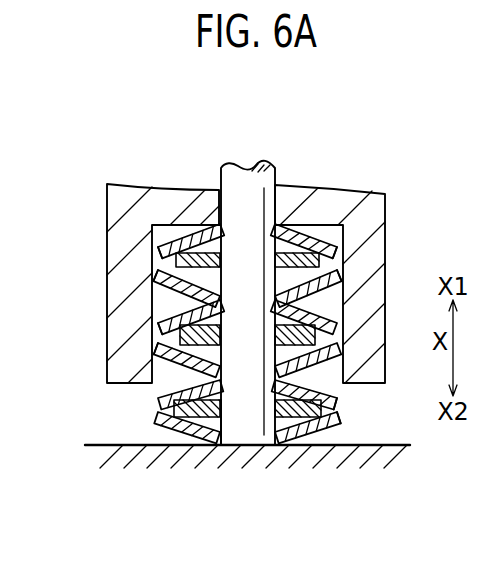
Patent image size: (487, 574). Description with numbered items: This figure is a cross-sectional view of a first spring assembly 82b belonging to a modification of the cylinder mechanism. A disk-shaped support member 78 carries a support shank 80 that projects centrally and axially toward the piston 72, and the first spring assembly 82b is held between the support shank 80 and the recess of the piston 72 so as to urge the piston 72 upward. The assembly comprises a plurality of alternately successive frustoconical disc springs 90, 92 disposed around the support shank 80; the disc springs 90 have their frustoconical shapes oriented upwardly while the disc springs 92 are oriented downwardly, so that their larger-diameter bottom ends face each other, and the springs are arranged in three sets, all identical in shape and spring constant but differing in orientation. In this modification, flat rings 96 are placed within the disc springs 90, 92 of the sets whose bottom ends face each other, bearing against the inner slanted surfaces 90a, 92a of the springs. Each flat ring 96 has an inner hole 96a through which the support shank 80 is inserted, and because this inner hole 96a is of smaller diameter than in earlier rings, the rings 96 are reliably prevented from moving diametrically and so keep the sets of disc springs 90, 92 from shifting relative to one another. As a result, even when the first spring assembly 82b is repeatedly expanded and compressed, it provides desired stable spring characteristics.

The piston 72 is at (118, 203).
The support member 78 is at (313, 452).
The support shank 80 is at (248, 420).
The first spring assembly 82b is at (416, 130).
The disc spring 90 is at (163, 247).
The inner slanted surface 90a is at (168, 278).
The disc spring 92 is at (185, 300).
The inner slanted surface 92a is at (184, 405).
The flat ring 96 is at (332, 249).
The inner hole 96a is at (221, 408).